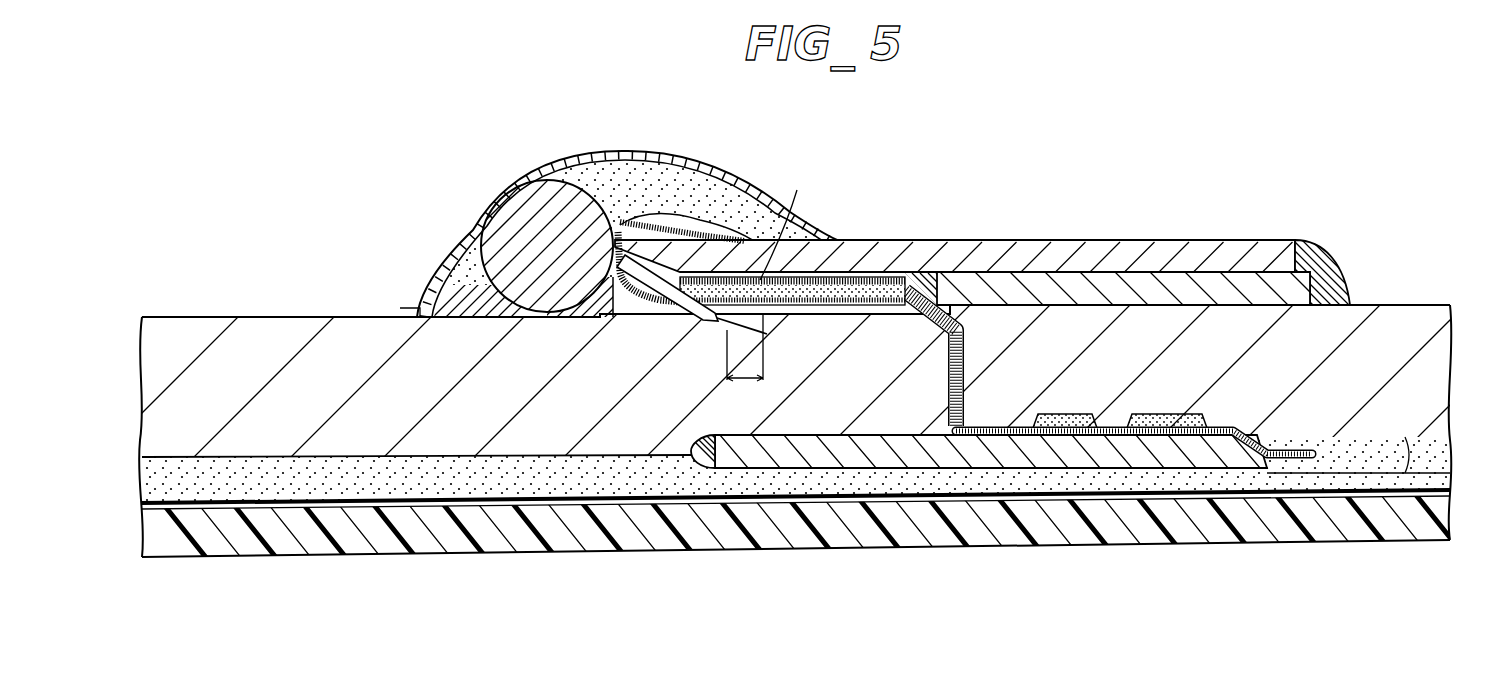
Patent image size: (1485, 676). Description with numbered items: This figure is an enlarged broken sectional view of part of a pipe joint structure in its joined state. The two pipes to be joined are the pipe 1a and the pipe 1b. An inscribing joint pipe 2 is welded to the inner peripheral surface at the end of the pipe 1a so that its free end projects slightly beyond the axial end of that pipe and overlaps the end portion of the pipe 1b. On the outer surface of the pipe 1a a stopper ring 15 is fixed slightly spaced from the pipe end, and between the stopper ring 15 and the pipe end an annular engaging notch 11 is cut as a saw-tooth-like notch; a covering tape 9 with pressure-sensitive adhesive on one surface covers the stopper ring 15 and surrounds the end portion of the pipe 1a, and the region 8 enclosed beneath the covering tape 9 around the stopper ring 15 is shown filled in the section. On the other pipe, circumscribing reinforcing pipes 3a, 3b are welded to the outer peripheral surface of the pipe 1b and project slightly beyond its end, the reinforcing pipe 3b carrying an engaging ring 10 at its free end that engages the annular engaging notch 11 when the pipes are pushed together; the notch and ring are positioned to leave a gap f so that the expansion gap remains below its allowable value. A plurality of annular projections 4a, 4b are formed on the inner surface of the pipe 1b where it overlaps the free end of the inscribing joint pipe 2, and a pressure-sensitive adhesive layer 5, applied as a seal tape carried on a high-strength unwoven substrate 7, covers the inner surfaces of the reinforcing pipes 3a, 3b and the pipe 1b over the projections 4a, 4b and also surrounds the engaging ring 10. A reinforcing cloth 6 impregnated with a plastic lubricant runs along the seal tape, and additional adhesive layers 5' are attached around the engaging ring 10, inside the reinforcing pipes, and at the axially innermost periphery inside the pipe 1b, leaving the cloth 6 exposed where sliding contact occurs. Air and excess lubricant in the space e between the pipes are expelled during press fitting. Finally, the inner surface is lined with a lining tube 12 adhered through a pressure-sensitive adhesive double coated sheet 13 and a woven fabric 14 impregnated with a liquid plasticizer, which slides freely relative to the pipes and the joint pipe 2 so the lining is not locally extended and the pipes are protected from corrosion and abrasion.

The pipe 1a is at (320, 316).
The pipe 1b is at (1400, 303).
The inscribing joint pipe 2 is at (825, 433).
The circumscribing reinforcing pipe 3a is at (1062, 257).
The circumscribing reinforcing pipe 3b is at (1140, 283).
The annular projection 4a is at (1027, 428).
The annular projection 4b is at (1112, 428).
The pressure-sensitive adhesive layer 5 is at (965, 318).
The additional adhesive layer 5' is at (1345, 429).
The reinforcing cloth 6 is at (840, 283).
The substrate 7 is at (866, 290).
The resin filling 8 is at (690, 185).
The covering tape 9 is at (640, 152).
The engaging ring 10 is at (700, 320).
The annular engaging notch 11 is at (765, 325).
The lining tube 12 is at (933, 537).
The pressure-sensitive adhesive double coated sheet 13 is at (645, 497).
The woven fabric 14 is at (570, 482).
The stopper ring 15 is at (483, 205).
The space e is at (783, 221).
The gap f is at (745, 347).